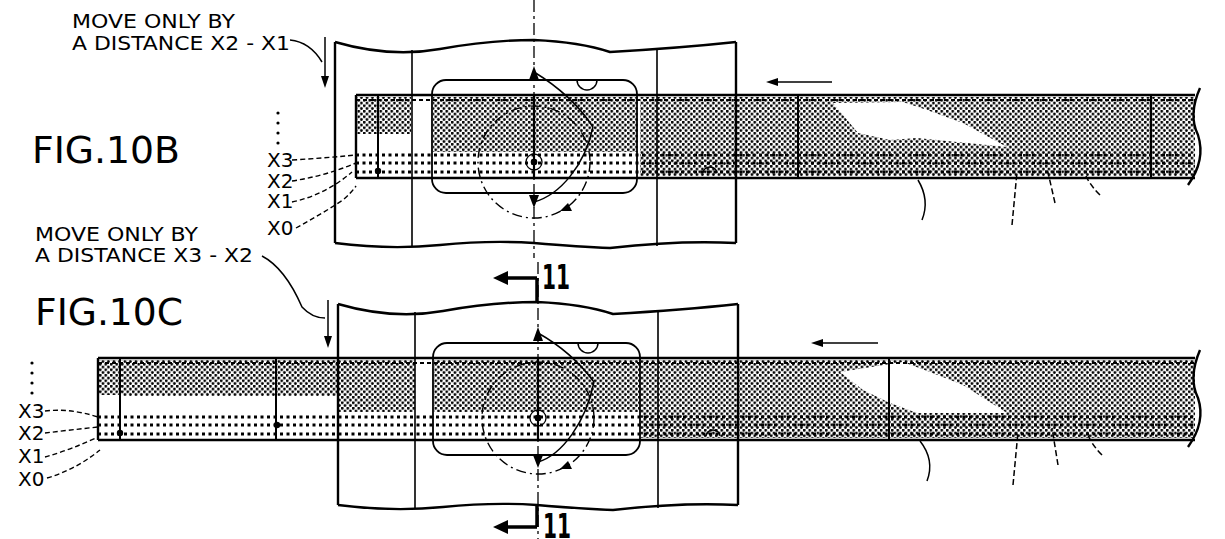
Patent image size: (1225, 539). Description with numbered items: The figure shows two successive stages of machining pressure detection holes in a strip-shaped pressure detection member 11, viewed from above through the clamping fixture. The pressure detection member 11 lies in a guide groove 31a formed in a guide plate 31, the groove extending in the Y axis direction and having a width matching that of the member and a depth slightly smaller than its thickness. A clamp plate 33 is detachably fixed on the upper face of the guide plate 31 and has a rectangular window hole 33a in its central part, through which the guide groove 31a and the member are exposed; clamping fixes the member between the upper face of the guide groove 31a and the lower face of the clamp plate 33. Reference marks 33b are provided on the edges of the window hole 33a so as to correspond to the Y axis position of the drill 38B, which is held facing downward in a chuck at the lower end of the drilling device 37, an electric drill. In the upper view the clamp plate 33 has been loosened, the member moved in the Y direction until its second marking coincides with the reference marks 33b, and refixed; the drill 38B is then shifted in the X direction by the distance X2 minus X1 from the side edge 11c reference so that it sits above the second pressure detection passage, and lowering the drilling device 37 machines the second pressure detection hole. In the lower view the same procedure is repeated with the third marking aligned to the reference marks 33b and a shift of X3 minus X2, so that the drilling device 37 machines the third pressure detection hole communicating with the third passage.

In FIG. 10B, the pressure detection member 11 is at (1052, 92).
In FIG. 10C, the pressure detection member 11 is at (1057, 352).
In FIG. 10B, the side edge 11c is at (925, 212).
In FIG. 10C, the side edge 11c is at (926, 473).
In FIG. 10B, the guide plate 31 is at (740, 60).
In FIG. 10C, the guide plate 31 is at (743, 323).
In FIG. 10B, the guide groove 31a is at (704, 176).
In FIG. 10C, the guide groove 31a is at (706, 440).
In FIG. 10B, the clamp plate 33 is at (405, 66).
In FIG. 10C, the clamp plate 33 is at (407, 326).
In FIG. 10B, the window hole 33a is at (590, 78).
In FIG. 10C, the window hole 33a is at (590, 341).
In FIG. 10B, the reference marks 33b is at (534, 137).
In FIG. 10C, the reference marks 33b is at (536, 397).
In FIG. 10B, the drilling device 37 is at (574, 211).
In FIG. 10C, the drilling device 37 is at (565, 470).
In FIG. 10B, the drill 38B is at (532, 158).
In FIG. 10C, the drill 38B is at (535, 414).